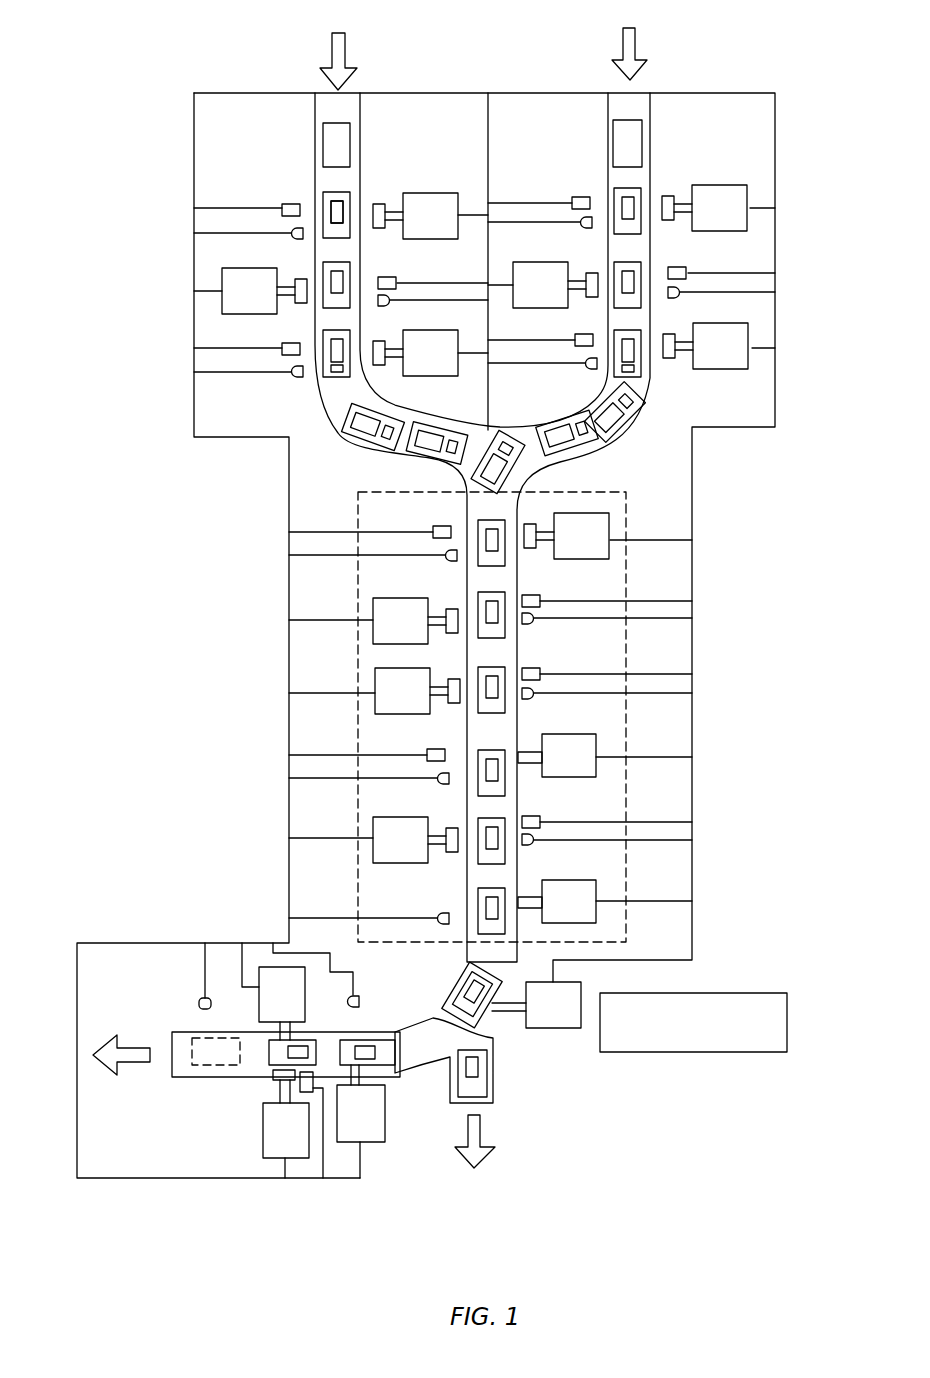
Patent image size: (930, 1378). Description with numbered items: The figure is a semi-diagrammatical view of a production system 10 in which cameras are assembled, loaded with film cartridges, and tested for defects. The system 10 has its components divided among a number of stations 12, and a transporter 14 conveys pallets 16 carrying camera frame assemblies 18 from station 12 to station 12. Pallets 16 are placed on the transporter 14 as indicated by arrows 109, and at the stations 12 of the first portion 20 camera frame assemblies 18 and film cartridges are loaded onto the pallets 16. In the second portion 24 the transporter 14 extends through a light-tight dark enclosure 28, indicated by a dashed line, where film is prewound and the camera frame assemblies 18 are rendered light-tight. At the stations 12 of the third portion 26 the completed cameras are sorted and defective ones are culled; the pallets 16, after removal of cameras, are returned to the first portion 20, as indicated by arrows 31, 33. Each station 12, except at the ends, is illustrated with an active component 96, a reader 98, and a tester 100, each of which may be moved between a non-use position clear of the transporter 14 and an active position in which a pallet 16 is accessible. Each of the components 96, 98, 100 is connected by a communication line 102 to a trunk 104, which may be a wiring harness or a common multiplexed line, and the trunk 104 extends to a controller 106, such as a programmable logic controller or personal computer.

The production system 10 is at (232, 515).
The station 12 is at (699, 171).
The transporter 14 is at (360, 105).
The pallet 16 is at (350, 160).
The camera frame assembly 18 is at (328, 206).
The first portion 20 is at (186, 190).
The second portion 24 is at (283, 629).
The third portion 26 is at (583, 1100).
The dark enclosure 28 is at (626, 575).
The arrow 31 is at (483, 1130).
The arrow 33 is at (128, 1066).
The active component 96 is at (715, 369).
The reader 98 is at (531, 620).
The tester 100 is at (290, 204).
The communication line 102 is at (480, 178).
The trunk 104 is at (290, 691).
The controller 106 is at (722, 972).
The arrow 109 is at (346, 52).